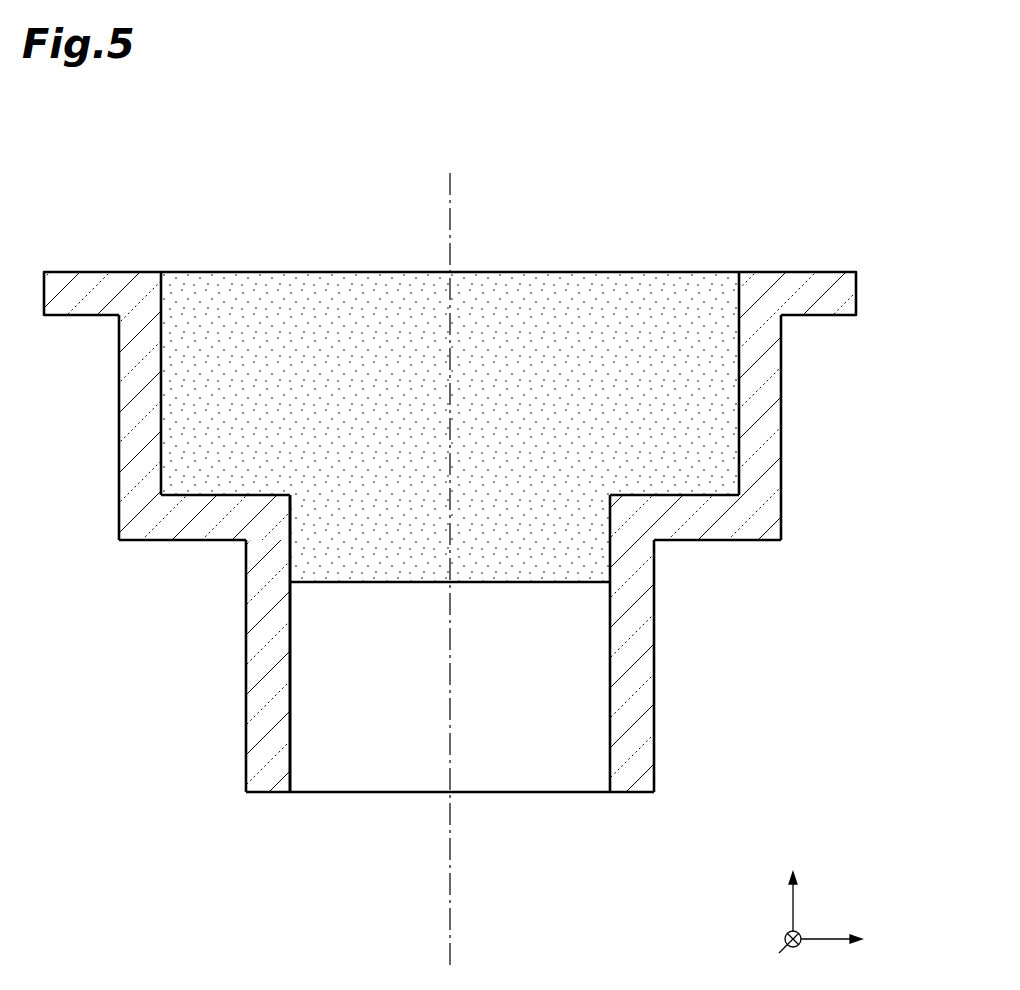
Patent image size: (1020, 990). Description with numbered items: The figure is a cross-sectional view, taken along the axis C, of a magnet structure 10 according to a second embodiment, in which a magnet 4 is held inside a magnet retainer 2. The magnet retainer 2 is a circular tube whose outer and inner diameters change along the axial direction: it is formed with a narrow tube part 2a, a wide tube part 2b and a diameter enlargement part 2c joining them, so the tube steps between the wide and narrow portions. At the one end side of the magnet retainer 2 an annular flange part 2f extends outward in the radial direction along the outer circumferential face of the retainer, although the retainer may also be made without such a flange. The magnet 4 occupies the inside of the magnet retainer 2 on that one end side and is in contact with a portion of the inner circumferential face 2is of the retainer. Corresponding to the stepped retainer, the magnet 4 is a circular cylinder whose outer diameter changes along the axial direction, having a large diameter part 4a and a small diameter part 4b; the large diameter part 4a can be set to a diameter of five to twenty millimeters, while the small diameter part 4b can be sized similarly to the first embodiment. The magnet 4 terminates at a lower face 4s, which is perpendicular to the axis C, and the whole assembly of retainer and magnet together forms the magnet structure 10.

The magnet structure 10 is at (815, 191).
The magnet retainer 2 is at (778, 271).
The narrow tube part 2a is at (125, 271).
The wide tube part 2b is at (582, 793).
The diameter enlargement part 2c is at (738, 540).
The flange part 2f is at (856, 287).
The inner circumferential face 2is is at (291, 735).
The magnet 4 is at (450, 514).
The large diameter part 4a is at (318, 335).
The small diameter part 4b is at (365, 533).
The lower face 4s is at (525, 584).
The axis C is at (452, 955).